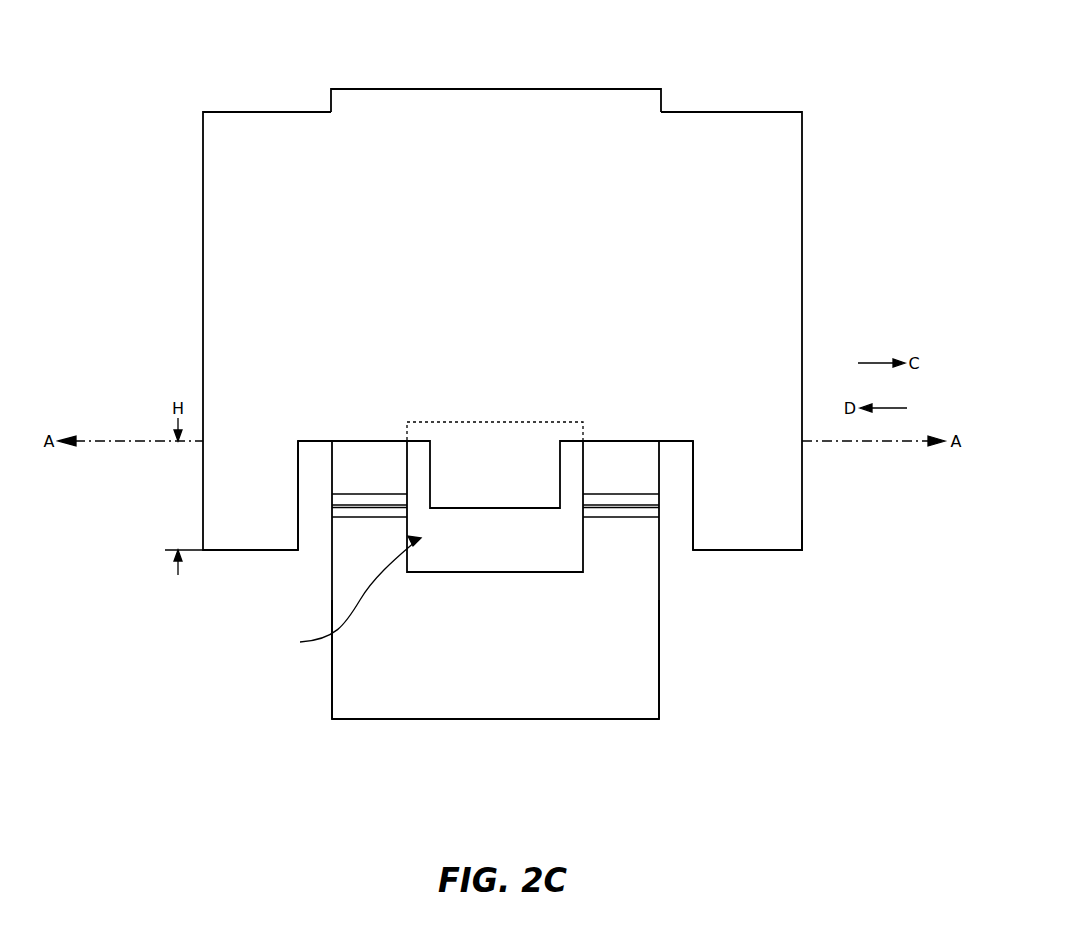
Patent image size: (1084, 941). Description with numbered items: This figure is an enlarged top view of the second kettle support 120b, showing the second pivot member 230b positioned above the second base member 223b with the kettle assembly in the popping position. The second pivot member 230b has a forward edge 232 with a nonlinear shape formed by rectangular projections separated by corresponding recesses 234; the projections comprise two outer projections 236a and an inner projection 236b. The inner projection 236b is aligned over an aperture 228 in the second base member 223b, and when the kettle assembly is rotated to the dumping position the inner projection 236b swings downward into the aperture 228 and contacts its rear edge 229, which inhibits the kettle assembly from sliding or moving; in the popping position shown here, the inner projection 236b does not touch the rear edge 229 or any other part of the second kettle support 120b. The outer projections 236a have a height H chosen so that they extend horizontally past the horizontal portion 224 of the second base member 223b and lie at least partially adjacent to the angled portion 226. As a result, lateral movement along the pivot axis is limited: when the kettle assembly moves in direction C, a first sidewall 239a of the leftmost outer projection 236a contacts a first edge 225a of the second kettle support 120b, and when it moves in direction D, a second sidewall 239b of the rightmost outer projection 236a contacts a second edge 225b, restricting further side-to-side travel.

The second kettle support 120b is at (491, 98).
The second pivot member 230b is at (220, 302).
The second base member 223b is at (626, 719).
The first edge 225a is at (332, 671).
The second edge 225b is at (659, 671).
The angled portion 226 is at (495, 700).
The horizontal portion 224 is at (597, 477).
The rear edge 229 is at (488, 428).
The recesses 234 is at (345, 446).
The outer projections 236a is at (247, 550).
The inner projection 236b is at (477, 508).
The first sidewall 239a is at (300, 524).
The second sidewall 239b is at (683, 520).
The forward edge 232 is at (790, 550).
The aperture 228 is at (344, 594).